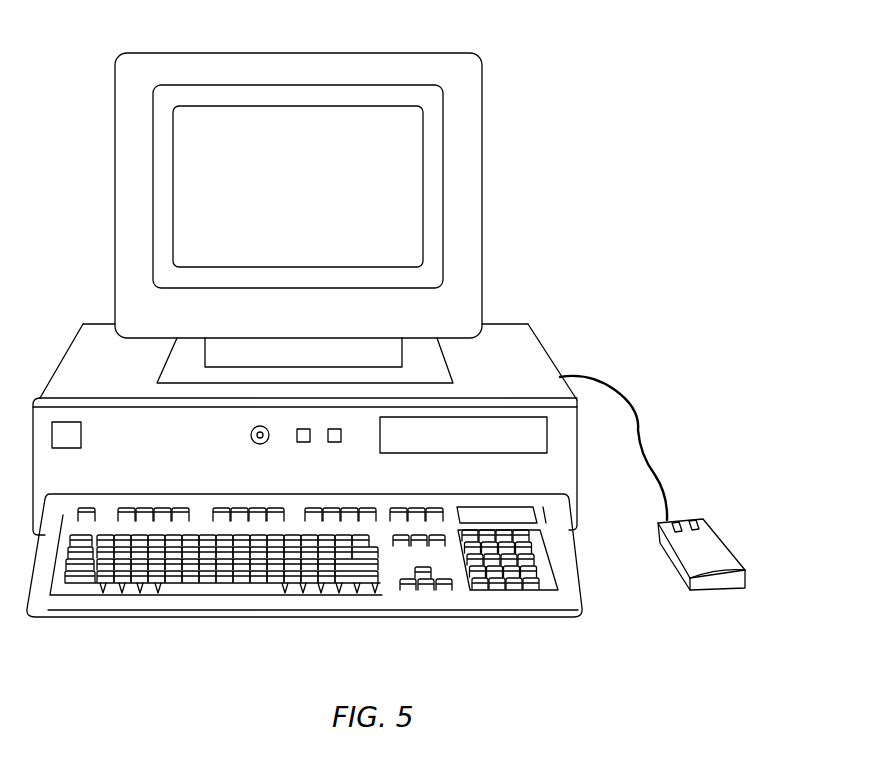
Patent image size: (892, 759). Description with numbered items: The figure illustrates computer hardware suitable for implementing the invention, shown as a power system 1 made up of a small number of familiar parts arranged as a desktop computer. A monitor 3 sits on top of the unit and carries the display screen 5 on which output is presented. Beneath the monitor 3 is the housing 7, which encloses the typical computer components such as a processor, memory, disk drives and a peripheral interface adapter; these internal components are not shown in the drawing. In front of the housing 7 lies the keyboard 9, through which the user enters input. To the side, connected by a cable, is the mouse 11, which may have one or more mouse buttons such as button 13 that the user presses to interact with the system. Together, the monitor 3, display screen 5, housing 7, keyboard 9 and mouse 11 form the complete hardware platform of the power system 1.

The power system 1 is at (552, 44).
The monitor 3 is at (482, 118).
The display screen 5 is at (412, 195).
The housing 7 is at (540, 340).
The keyboard 9 is at (450, 618).
The mouse 11 is at (675, 483).
The button 13 is at (677, 523).